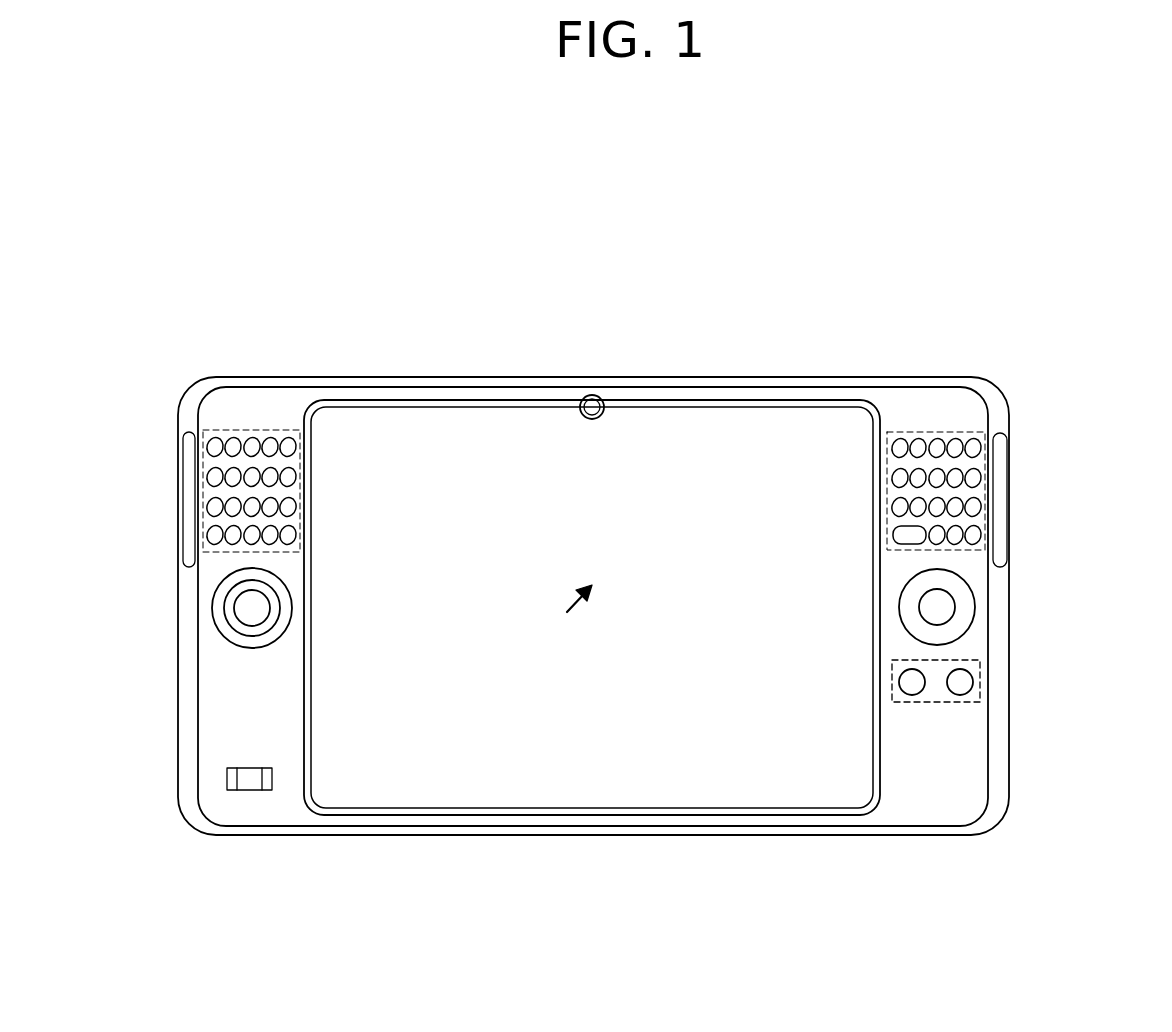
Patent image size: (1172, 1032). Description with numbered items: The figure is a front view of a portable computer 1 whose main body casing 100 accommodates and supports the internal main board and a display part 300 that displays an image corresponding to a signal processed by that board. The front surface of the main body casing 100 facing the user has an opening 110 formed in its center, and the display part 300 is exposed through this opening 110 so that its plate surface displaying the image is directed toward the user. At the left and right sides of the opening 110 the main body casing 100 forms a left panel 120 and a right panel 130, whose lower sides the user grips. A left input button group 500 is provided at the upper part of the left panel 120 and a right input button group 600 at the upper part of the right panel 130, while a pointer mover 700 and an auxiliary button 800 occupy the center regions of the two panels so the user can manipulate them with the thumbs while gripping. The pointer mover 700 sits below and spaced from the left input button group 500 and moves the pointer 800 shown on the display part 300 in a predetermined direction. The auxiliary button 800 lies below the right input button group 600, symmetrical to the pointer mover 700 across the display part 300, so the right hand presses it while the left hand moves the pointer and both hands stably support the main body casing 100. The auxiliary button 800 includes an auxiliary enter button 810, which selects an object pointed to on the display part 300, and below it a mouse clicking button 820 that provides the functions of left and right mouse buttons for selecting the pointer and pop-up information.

The portable computer 1 is at (337, 198).
The main body casing 100 is at (538, 827).
The opening 110 is at (685, 803).
The left panel 120 is at (208, 708).
The right panel 130 is at (970, 752).
The display part 300 is at (781, 780).
The left input button group 500 is at (250, 430).
The right input button group 600 is at (928, 432).
The pointer mover 700 is at (240, 608).
The auxiliary button 800 is at (597, 597).
The auxiliary enter button 810 is at (955, 607).
The mouse clicking button 820 is at (985, 680).